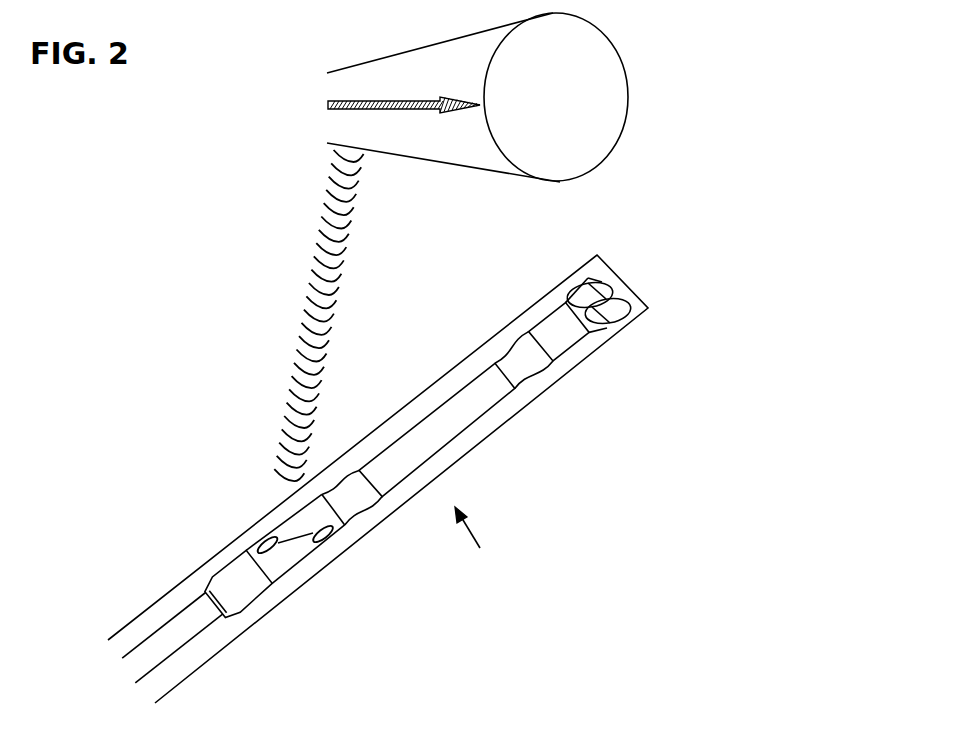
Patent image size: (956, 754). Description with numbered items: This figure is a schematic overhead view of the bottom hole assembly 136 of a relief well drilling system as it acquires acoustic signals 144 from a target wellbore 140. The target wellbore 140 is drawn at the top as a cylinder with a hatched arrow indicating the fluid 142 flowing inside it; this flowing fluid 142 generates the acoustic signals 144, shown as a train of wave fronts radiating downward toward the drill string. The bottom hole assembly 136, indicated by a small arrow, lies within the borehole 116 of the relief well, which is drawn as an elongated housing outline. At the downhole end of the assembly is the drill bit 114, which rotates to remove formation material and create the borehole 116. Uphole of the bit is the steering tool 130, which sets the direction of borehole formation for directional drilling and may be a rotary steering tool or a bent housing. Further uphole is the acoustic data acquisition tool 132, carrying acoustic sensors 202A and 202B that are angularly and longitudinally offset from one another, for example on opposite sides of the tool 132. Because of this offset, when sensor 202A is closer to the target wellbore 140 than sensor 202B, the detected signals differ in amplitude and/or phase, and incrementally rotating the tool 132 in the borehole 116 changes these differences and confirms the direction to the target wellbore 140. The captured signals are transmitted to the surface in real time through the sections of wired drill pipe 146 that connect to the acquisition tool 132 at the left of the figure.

The drill bit 114 is at (608, 312).
The borehole 116 is at (502, 333).
The steering tool 130 is at (465, 428).
The acoustic data acquisition tool 132 is at (285, 573).
The bottom hole assembly 136 is at (487, 536).
The target wellbore 140 is at (412, 50).
The fluid 142 is at (410, 110).
The acoustic signals 144 is at (312, 262).
The wired drill pipe 146 is at (167, 630).
The acoustic sensor 202A is at (267, 542).
The acoustic sensor 202B is at (325, 535).